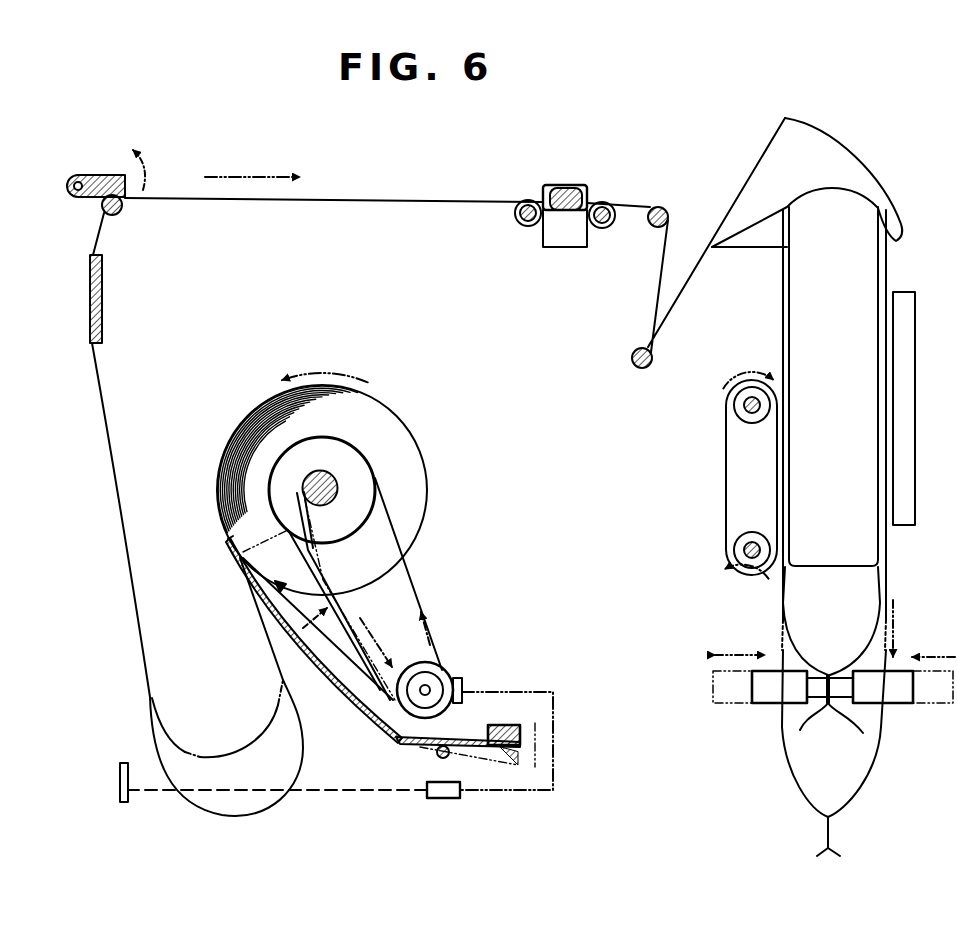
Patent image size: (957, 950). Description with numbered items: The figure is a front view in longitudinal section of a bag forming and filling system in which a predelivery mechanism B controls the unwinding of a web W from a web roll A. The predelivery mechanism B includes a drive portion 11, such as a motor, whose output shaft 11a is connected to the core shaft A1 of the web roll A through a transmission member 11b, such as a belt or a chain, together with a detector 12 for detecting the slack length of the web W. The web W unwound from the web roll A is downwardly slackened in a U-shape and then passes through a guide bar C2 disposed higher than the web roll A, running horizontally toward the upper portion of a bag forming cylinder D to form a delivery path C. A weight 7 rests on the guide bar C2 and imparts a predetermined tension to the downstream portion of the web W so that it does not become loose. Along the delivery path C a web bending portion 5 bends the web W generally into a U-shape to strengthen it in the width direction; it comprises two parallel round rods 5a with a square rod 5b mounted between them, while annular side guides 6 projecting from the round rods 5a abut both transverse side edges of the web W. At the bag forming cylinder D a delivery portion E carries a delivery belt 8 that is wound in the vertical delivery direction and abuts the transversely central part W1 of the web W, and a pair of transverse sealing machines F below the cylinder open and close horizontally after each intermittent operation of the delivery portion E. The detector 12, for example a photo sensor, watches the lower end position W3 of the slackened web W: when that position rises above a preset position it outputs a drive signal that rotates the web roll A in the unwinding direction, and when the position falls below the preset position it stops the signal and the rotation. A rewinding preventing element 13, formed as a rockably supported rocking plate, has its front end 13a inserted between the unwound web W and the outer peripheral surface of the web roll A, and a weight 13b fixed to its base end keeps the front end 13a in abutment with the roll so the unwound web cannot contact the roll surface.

The weight 7 is at (100, 175).
The guide bar C2 is at (119, 213).
The delivery path C is at (265, 205).
The web W is at (386, 198).
The web bending portion 5 is at (540, 190).
The round rods 5a is at (522, 225).
The square rod 5b is at (565, 186).
The side guides 6 is at (515, 208).
The bag forming cylinder D is at (862, 278).
The delivery portion E is at (780, 440).
The delivery belt 8 is at (736, 475).
The transversely central part W1 is at (783, 494).
The transverse sealing machines F is at (767, 707).
The web roll A is at (388, 403).
The core shaft A1 is at (330, 470).
The drive portion 11 is at (447, 672).
The output shaft 11a is at (420, 685).
The transmission member 11b is at (403, 563).
The predelivery mechanism B is at (474, 679).
The detector 12 is at (445, 798).
The rewinding preventing element 13 is at (335, 676).
The front end 13a is at (227, 574).
The weight 13b is at (510, 725).
The lower end position W3 is at (243, 758).